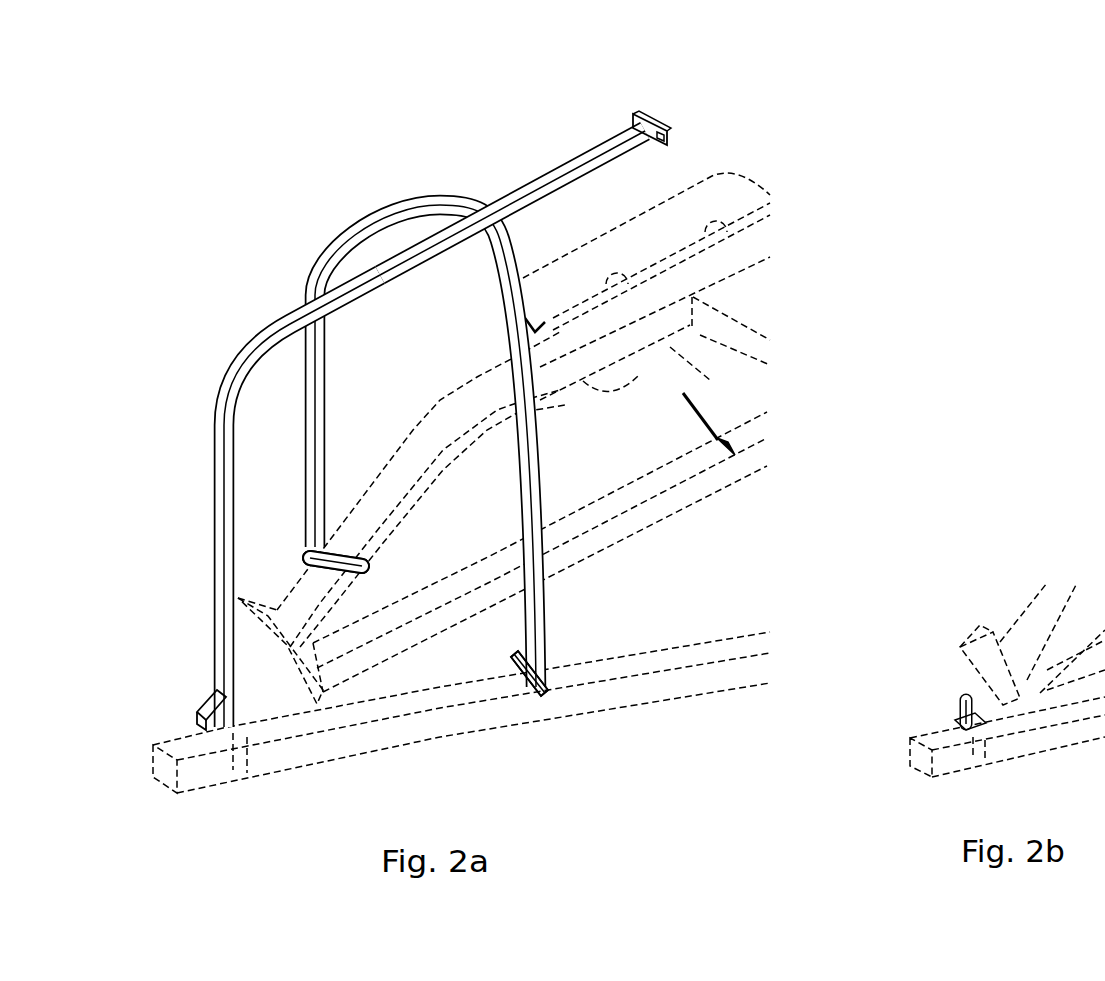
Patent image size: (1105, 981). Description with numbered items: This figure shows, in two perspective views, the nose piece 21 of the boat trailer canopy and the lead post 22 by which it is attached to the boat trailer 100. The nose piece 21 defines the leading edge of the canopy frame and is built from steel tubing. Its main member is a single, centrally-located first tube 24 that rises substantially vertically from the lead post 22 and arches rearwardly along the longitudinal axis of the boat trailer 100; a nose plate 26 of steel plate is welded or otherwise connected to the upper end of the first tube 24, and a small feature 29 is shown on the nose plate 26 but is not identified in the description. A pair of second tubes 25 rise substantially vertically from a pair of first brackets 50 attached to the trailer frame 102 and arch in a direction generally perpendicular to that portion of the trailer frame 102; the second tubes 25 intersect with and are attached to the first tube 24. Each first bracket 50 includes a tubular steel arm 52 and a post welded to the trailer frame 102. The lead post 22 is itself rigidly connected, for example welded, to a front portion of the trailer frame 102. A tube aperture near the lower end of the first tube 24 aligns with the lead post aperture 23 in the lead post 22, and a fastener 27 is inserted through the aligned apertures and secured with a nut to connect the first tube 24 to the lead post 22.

In FIG. 2A, the nose piece 21 is at (226, 378).
In FIG. 2B, the lead post 22 is at (975, 718).
In FIG. 2B, the lead post aperture 23 is at (962, 707).
In FIG. 2A, the first tube 24 is at (530, 183).
In FIG. 2A, the second tubes 25 is at (333, 248).
In FIG. 2A, the nose plate 26 is at (641, 110).
In FIG. 2A, the fastener 27 is at (310, 540).
In FIG. 2A, the mounting hole 29 is at (668, 136).
In FIG. 2A, the first brackets 50 is at (543, 693).
In FIG. 2A, the tubular steel arm 52 is at (355, 550).
In FIG. 2A, the boat trailer 100 is at (668, 466).
In FIG. 2A, the trailer frame 102 is at (683, 696).
In FIG. 2B, the trailer frame 102 is at (932, 727).